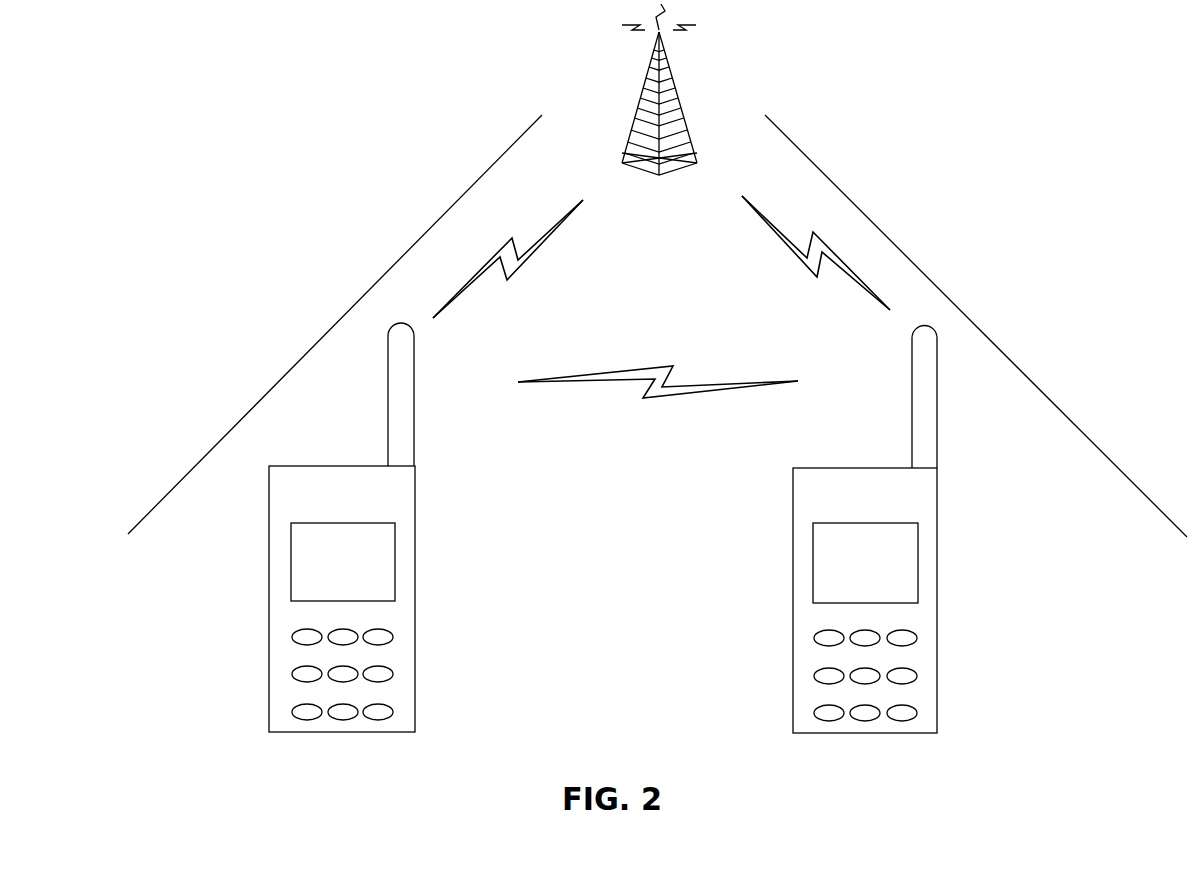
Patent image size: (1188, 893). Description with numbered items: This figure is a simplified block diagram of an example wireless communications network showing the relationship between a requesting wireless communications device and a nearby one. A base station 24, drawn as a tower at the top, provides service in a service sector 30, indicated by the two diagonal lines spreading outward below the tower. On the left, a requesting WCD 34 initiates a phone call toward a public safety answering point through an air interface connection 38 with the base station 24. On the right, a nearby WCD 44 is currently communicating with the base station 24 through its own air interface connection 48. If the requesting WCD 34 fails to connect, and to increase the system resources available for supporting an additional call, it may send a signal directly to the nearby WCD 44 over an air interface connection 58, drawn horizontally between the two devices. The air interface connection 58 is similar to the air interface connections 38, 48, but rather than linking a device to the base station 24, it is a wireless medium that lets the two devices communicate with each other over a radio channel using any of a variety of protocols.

The base station 24 is at (688, 115).
The service sector 30 is at (627, 628).
The requesting WCD 34 is at (268, 490).
The air interface connection 38 is at (532, 273).
The nearby WCD 44 is at (790, 492).
The air interface connection 48 is at (792, 269).
The air interface connection 58 is at (664, 363).